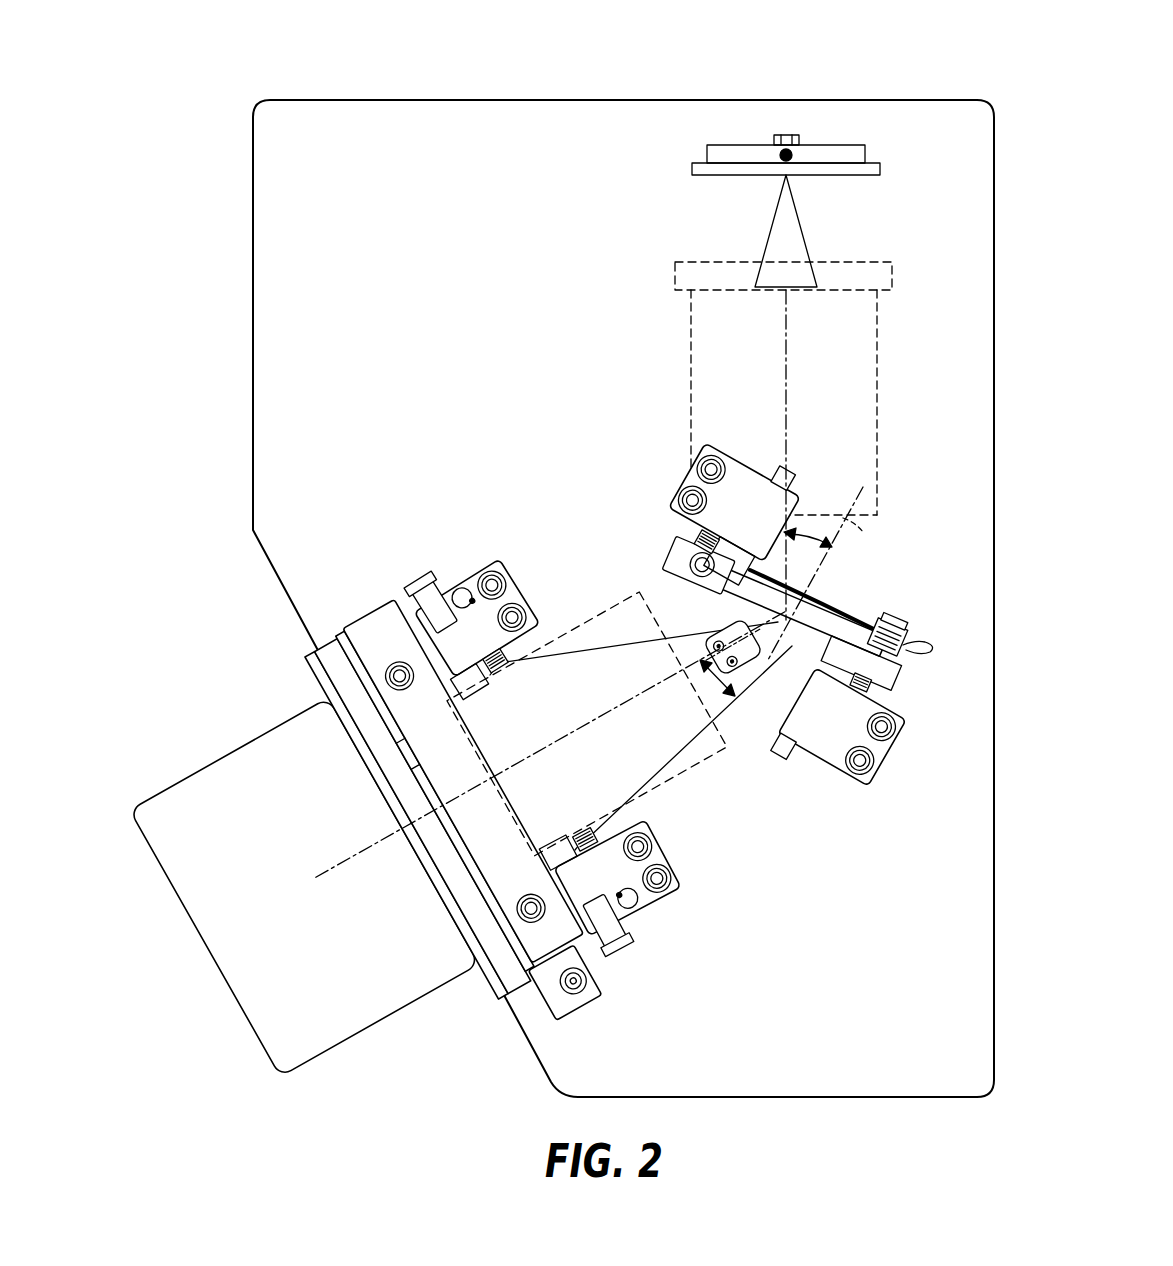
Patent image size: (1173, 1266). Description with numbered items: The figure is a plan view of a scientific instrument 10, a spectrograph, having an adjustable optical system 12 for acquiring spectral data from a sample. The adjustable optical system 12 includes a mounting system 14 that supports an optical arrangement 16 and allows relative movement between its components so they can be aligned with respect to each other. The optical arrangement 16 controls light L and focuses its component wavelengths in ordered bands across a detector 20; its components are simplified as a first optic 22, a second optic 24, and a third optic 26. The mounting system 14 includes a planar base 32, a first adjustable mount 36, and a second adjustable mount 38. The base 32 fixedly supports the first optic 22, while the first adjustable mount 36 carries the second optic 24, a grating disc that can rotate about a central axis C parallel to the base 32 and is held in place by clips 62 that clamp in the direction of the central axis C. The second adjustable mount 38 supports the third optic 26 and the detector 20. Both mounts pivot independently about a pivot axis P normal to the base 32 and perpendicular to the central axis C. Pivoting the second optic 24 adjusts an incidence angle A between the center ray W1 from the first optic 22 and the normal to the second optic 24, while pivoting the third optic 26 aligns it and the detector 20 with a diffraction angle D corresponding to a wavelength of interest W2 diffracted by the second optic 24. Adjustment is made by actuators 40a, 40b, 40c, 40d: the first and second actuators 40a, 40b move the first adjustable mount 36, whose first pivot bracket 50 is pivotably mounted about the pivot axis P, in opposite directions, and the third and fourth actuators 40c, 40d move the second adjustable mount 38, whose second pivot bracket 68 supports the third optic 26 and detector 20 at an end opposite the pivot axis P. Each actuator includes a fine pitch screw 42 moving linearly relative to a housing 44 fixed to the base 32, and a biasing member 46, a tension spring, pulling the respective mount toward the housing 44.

The scientific instrument 10 is at (403, 80).
The adjustable optical system 12 is at (249, 376).
The mounting system 14 is at (398, 556).
The optical arrangement 16 is at (834, 297).
The detector 20 is at (232, 738).
The first optic 22 is at (878, 353).
The second optic 24 is at (872, 620).
The third optic 26 is at (664, 788).
The base 32 is at (960, 920).
The first adjustable mount 36 is at (906, 648).
The second adjustable mount 38 is at (560, 650).
The first actuator 40a is at (892, 752).
The second actuator 40b is at (678, 512).
The third actuator 40c is at (652, 915).
The fourth actuator 40d is at (497, 578).
The fine pitch screw 42 is at (472, 685).
The housing 44 is at (510, 580).
The biasing member 46 is at (503, 668).
The first pivot bracket 50 is at (720, 586).
The clip 62 is at (845, 603).
The second pivot bracket 68 is at (716, 625).
The incidence angle A is at (808, 517).
The central axis C is at (861, 535).
The diffraction angle D is at (702, 693).
The pivot axis P is at (815, 573).
The light L is at (807, 222).
The center ray W1 is at (788, 358).
The wavelength of interest W2 is at (613, 710).